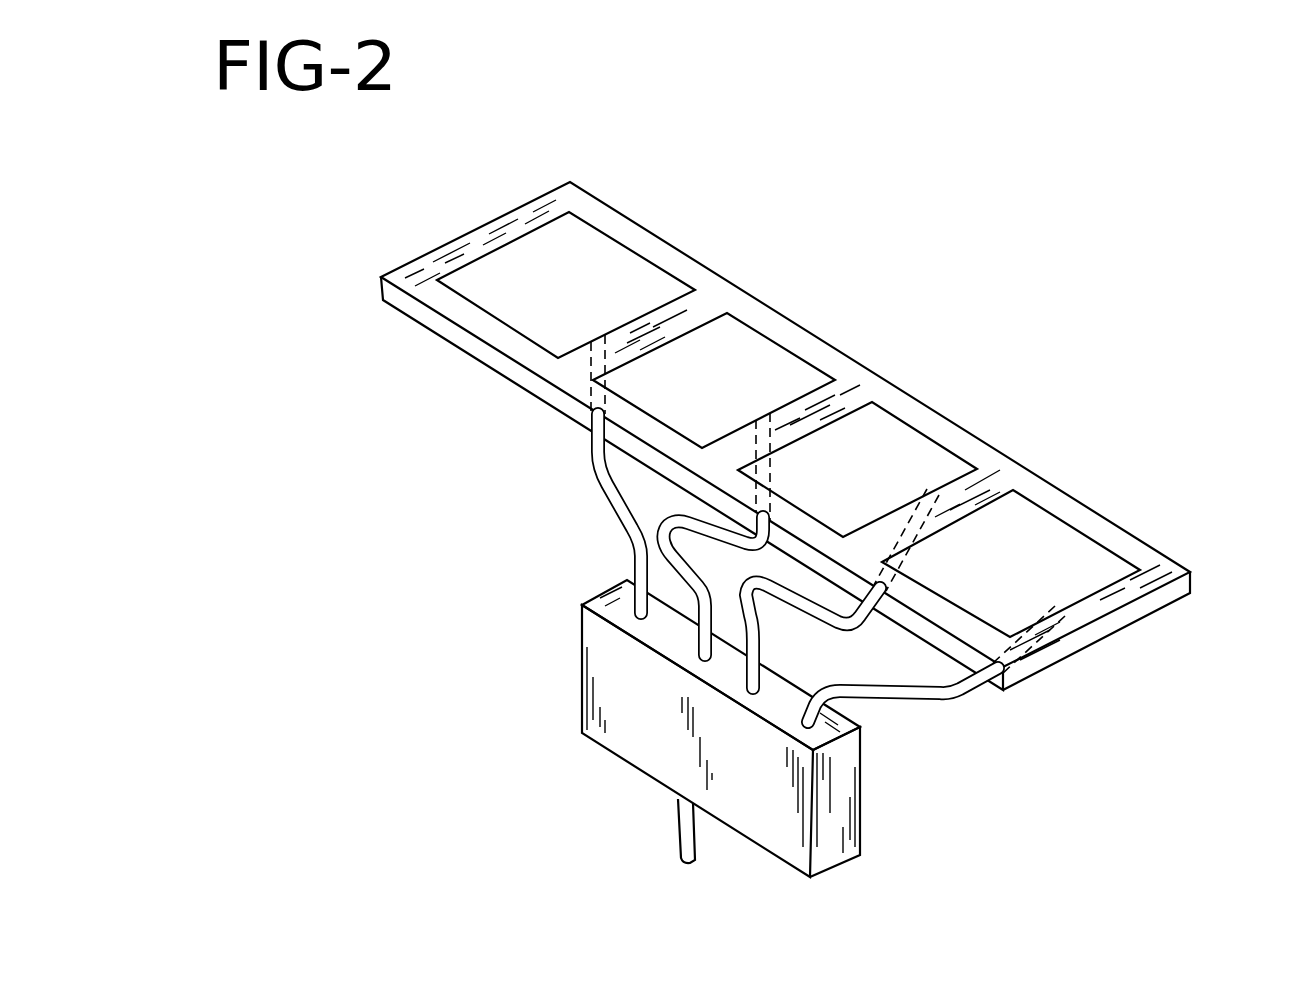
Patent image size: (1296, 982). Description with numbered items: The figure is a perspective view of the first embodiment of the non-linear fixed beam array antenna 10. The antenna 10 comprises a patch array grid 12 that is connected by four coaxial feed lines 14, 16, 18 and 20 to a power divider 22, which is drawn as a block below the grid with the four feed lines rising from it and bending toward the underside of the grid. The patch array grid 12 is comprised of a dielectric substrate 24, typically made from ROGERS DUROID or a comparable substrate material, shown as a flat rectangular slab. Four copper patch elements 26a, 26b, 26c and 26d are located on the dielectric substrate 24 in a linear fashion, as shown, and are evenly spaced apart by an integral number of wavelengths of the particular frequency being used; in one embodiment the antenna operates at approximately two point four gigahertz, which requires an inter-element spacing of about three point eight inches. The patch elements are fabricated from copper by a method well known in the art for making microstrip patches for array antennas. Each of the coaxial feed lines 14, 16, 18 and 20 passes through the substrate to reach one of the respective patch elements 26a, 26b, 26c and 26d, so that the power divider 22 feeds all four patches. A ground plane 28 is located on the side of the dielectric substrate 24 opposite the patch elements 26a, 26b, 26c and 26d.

The non-linear fixed beam array antenna 10 is at (378, 697).
The patch array grid 12 is at (571, 197).
The coaxial feed line 14 is at (622, 530).
The coaxial feed line 16 is at (667, 530).
The coaxial feed line 18 is at (783, 587).
The coaxial feed line 20 is at (915, 700).
The power divider 22 is at (865, 818).
The dielectric substrate 24 is at (1173, 588).
The copper patch element 26a is at (597, 275).
The copper patch element 26b is at (745, 355).
The copper patch element 26c is at (890, 468).
The copper patch element 26d is at (1037, 548).
The ground plane 28 is at (1100, 640).